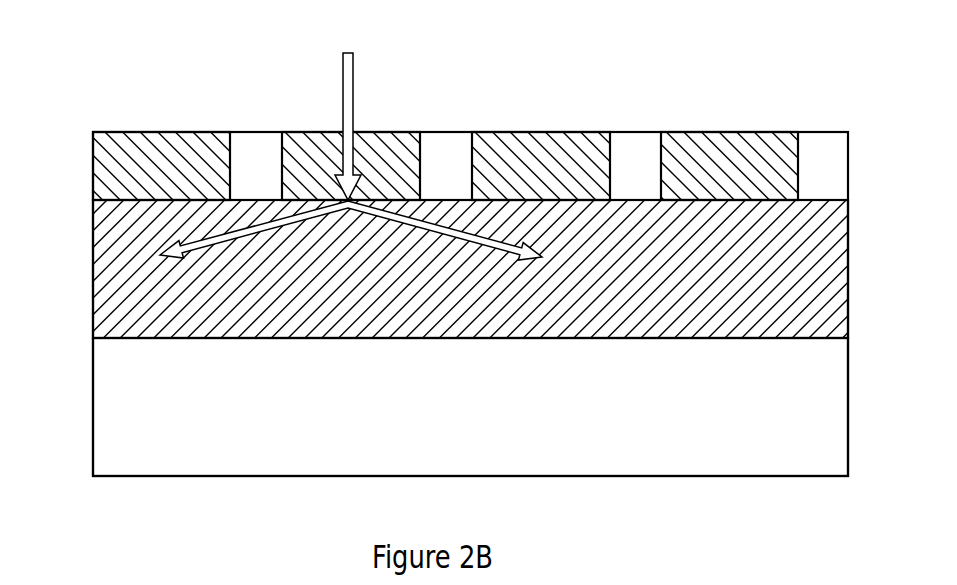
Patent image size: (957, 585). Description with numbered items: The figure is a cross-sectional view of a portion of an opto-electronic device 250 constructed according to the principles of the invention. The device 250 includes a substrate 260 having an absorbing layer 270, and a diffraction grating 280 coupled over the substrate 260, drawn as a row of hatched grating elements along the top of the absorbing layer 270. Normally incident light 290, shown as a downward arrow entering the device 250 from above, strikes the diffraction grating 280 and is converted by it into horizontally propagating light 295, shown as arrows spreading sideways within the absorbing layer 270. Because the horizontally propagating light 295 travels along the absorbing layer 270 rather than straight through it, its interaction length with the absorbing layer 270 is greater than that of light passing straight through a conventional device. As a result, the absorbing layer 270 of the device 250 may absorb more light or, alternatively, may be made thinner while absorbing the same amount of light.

The opto-electronic device 250 is at (168, 74).
The substrate 260 is at (93, 408).
The absorbing layer 270 is at (93, 279).
The diffraction grating 280 is at (77, 132).
The normally incident light 290 is at (353, 96).
The horizontally propagating light 295 is at (255, 222).